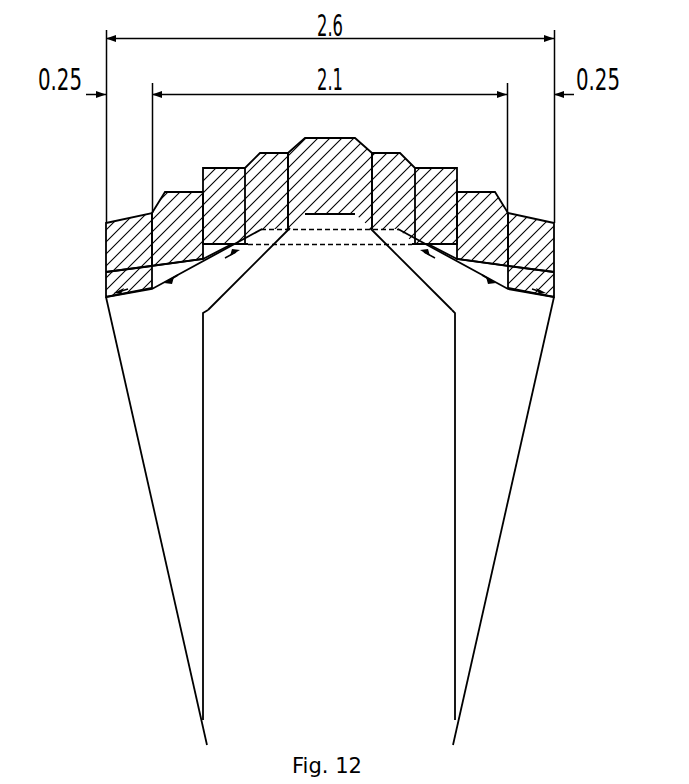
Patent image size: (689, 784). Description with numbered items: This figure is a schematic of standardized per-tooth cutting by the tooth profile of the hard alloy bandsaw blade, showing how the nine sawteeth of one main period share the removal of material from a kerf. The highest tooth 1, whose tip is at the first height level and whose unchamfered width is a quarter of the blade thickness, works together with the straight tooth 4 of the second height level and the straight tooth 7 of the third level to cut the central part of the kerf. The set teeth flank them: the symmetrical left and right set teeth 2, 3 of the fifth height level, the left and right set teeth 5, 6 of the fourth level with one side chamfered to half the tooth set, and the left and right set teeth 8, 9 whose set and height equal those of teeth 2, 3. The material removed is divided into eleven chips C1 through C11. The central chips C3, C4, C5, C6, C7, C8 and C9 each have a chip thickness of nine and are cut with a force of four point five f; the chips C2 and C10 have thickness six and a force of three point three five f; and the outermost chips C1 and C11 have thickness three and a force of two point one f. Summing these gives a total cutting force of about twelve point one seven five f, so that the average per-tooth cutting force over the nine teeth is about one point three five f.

The No. 1 tooth 1 is at (329, 515).
The No. 2 tooth 2 is at (503, 521).
The No. 8 tooth 8 is at (503, 521).
The No. 3 tooth 3 is at (156, 521).
The No. 9 tooth 9 is at (156, 521).
The No. 4 tooth 4 is at (270, 265).
The No. 5 tooth 5 is at (462, 262).
The No. 6 tooth 6 is at (165, 276).
The No. 7 tooth 7 is at (250, 247).
The generated chip C1 is at (107, 298).
The generated chip C2 is at (129, 255).
The generated chip C3 is at (177, 229).
The generated chip C4 is at (224, 206).
The generated chip C5 is at (266, 198).
The generated chip C6 is at (330, 183).
The generated chip C7 is at (393, 198).
The generated chip C8 is at (436, 206).
The generated chip C9 is at (482, 229).
The generated chip C10 is at (531, 255).
The generated chip C11 is at (555, 291).